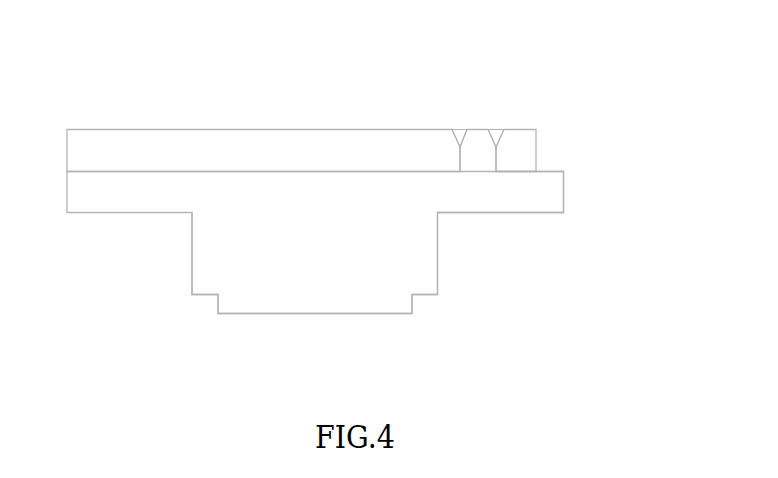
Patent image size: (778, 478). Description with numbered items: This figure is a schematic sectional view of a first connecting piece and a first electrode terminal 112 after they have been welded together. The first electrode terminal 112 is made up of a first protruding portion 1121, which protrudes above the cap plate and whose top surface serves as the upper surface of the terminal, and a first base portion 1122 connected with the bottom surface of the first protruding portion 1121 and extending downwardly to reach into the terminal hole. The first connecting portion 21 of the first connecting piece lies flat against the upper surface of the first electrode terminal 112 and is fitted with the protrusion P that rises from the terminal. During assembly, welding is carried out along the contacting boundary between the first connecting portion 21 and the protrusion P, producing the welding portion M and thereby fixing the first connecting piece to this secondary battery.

The first connecting portion 21 is at (165, 138).
The first electrode terminal 112 is at (389, 222).
The first protruding portion 1121 is at (543, 191).
The first base portion 1122 is at (427, 272).
The welding portion M is at (458, 131).
The protrusion P is at (484, 145).